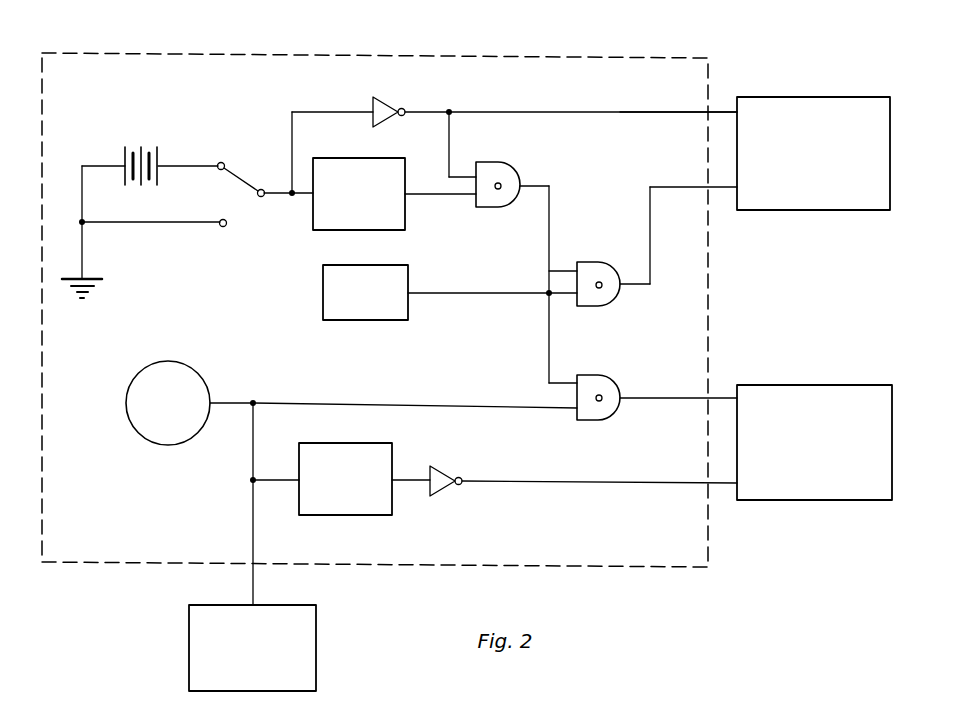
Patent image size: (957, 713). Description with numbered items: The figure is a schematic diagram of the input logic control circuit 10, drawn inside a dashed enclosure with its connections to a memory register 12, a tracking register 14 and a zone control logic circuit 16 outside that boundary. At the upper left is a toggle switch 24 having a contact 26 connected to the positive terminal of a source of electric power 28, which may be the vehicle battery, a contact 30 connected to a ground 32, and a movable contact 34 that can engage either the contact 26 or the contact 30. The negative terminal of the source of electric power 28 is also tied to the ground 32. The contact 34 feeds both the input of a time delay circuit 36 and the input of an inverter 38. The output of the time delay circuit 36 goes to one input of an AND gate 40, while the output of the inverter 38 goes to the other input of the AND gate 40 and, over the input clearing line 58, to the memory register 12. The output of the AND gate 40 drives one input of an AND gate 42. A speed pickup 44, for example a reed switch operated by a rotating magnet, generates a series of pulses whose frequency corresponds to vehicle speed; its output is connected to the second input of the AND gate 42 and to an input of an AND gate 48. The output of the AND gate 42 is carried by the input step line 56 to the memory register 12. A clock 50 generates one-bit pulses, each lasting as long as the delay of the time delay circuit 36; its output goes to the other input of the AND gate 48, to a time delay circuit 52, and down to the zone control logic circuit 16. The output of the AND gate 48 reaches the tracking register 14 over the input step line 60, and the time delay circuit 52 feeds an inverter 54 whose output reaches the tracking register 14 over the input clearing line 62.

The input logic control circuit 10 is at (522, 72).
The memory register 12 is at (802, 110).
The tracking register 14 is at (828, 392).
The zone control logic circuit 16 is at (199, 611).
The toggle switch 24 is at (246, 138).
The contact 26 is at (225, 163).
The source of electric power 28 is at (147, 147).
The contact 30 is at (223, 228).
The ground 32 is at (94, 277).
The contact 34 is at (232, 177).
The time delay circuit 36 is at (402, 217).
The inverter 38 is at (392, 101).
The AND gate 40 is at (512, 172).
The AND gate 42 is at (592, 268).
The speed pickup 44 is at (341, 318).
The AND gate 48 is at (597, 378).
The clock 50 is at (162, 372).
The time delay circuit 52 is at (312, 456).
The inverter 54 is at (452, 470).
The input step line 56 is at (690, 186).
The input clearing line 58 is at (665, 112).
The input step line 60 is at (673, 400).
The input clearing line 62 is at (625, 486).